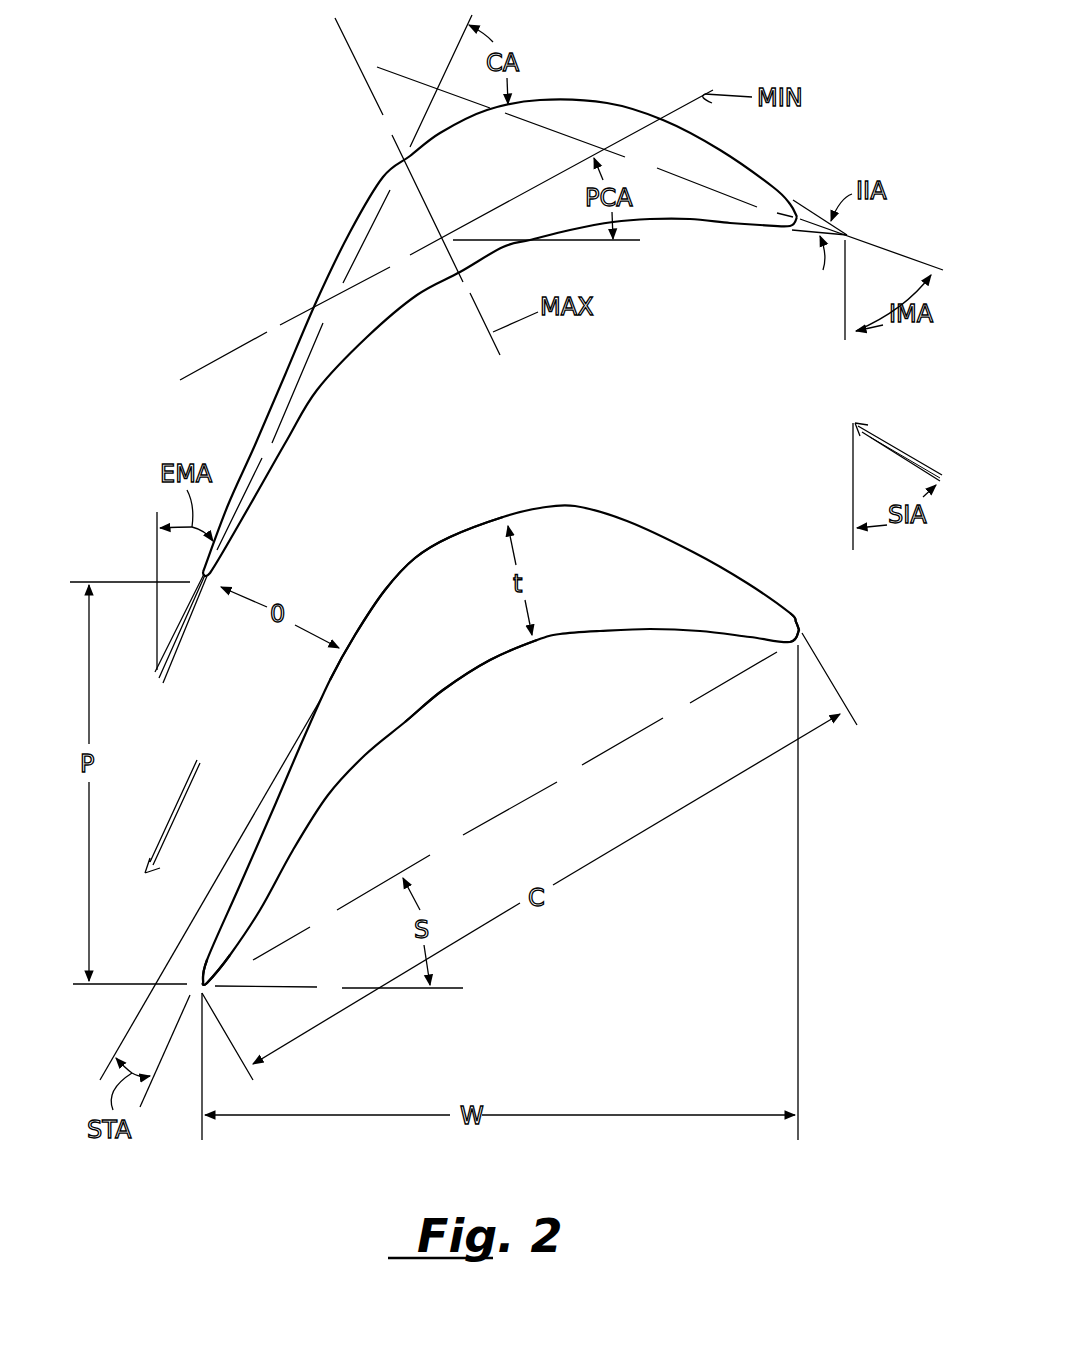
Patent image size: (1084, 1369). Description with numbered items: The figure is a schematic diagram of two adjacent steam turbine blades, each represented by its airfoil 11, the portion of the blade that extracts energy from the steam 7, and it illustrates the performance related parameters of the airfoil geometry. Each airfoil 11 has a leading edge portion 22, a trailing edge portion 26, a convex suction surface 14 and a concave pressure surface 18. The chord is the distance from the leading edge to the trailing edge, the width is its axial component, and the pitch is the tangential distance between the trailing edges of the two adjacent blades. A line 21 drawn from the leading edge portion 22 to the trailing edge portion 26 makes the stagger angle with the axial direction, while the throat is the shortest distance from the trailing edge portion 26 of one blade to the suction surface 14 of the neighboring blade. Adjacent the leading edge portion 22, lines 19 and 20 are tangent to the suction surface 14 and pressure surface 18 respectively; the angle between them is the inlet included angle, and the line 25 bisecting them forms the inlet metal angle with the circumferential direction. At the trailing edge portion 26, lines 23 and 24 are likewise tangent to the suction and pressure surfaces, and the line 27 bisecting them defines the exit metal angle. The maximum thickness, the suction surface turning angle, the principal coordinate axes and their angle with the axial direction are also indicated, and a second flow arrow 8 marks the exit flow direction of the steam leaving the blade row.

The steam 7 is at (898, 445).
The exit flow direction 8 is at (175, 800).
The airfoil portion 11 is at (440, 545).
The convex suction surface 14 is at (540, 508).
The concave pressure surface 18 is at (493, 663).
The tangent line 19 is at (797, 200).
The tangent line 20 is at (807, 232).
The line from leading edge to trailing edge 21 is at (547, 787).
The leading edge portion 22 is at (800, 625).
The tangent line 23 is at (183, 600).
The tangent line 24 is at (187, 627).
The bisecting line 25 is at (893, 252).
The trailing edge portion 26 is at (207, 987).
The bisecting line 27 is at (256, 472).